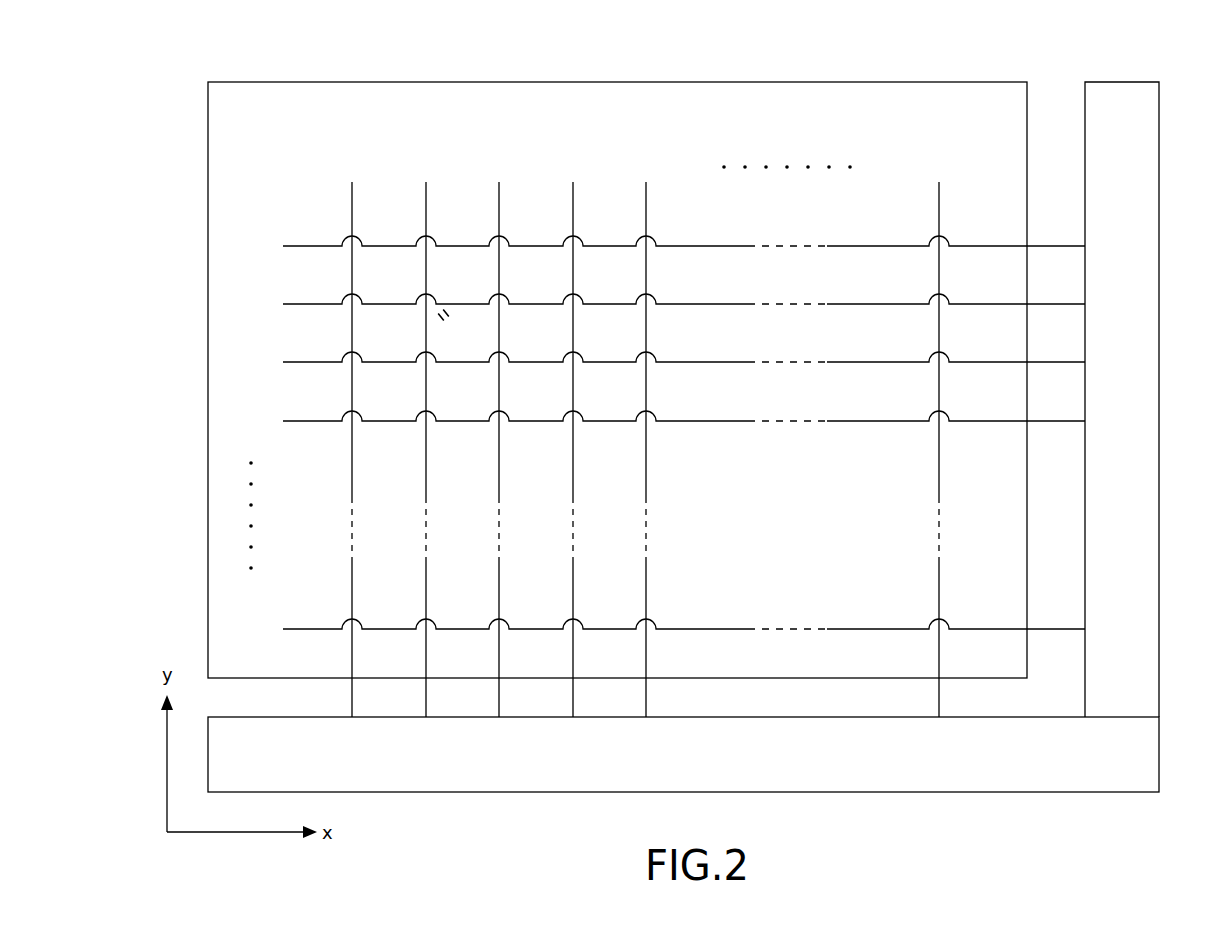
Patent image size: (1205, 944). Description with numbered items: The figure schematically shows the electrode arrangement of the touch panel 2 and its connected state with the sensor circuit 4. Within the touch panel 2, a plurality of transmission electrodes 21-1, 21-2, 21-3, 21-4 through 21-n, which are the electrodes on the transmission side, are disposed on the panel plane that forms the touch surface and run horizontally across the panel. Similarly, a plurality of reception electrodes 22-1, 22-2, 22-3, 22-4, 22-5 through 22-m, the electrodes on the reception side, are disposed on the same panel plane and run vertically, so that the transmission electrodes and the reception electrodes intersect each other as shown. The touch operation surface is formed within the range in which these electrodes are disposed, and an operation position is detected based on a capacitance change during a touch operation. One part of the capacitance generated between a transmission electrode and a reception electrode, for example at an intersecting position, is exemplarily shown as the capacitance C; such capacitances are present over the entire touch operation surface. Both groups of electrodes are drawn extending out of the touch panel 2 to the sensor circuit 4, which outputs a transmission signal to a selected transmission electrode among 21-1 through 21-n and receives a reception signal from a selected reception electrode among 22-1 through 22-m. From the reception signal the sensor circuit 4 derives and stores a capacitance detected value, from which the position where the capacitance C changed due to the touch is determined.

The touch panel 2 is at (347, 81).
The sensor circuit 4 is at (510, 792).
The transmission electrode 21-1 is at (658, 243).
The transmission electrode 21-2 is at (658, 301).
The transmission electrode 21-3 is at (658, 359).
The transmission electrode 21-4 is at (658, 418).
The transmission electrode 21-n is at (658, 626).
The reception electrode 22-1 is at (352, 436).
The reception electrode 22-2 is at (426, 436).
The reception electrode 22-3 is at (499, 436).
The reception electrode 22-4 is at (573, 436).
The reception electrode 22-5 is at (646, 436).
The reception electrode 22-m is at (939, 436).
The capacitance C is at (452, 308).